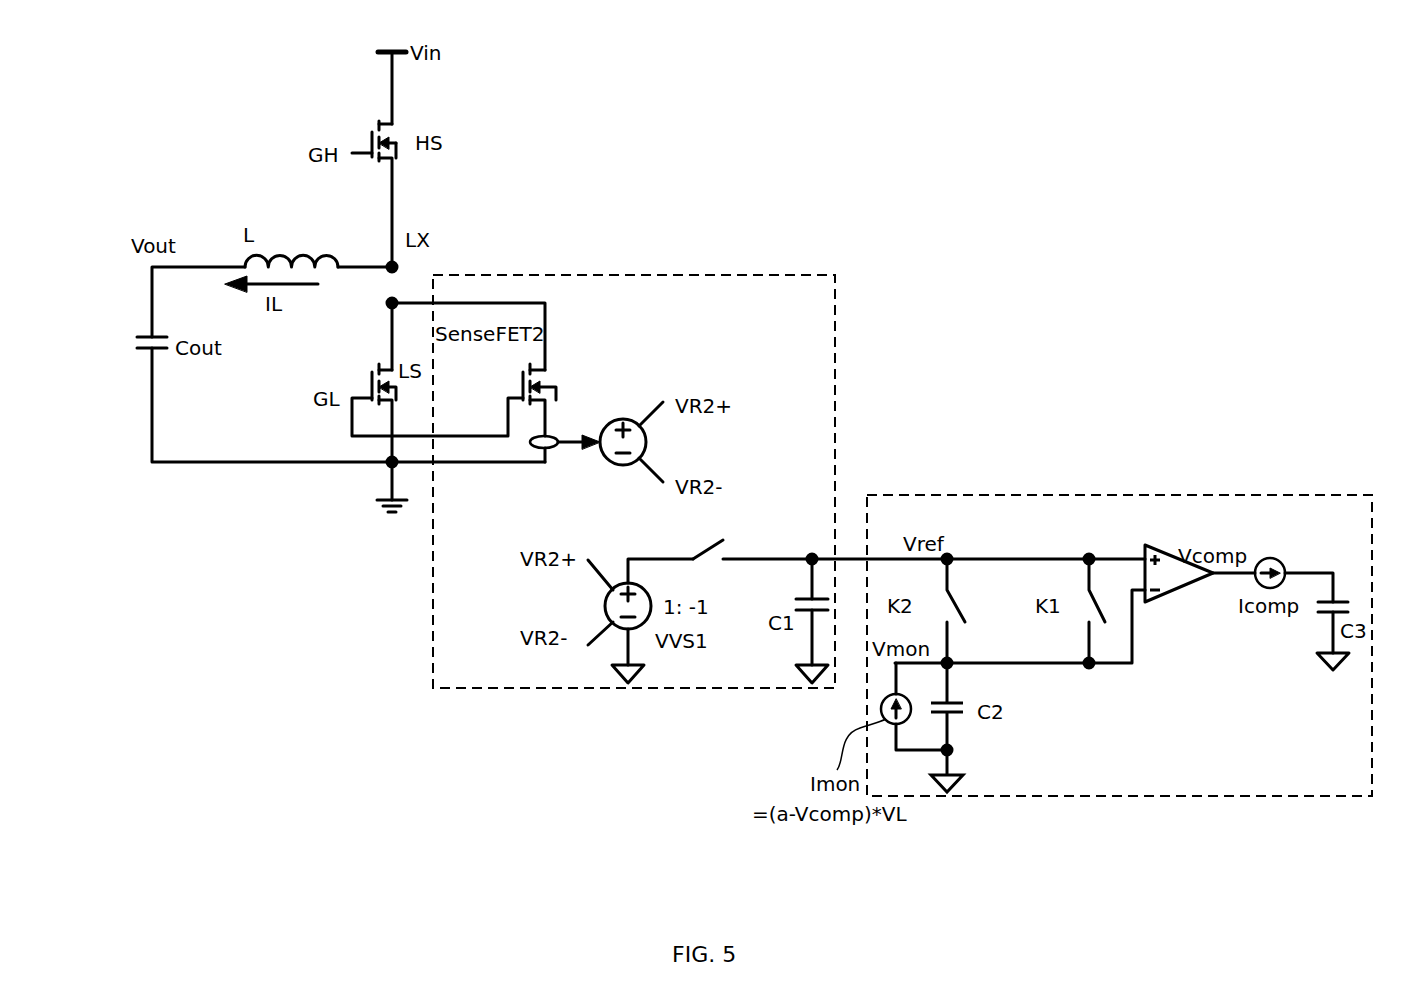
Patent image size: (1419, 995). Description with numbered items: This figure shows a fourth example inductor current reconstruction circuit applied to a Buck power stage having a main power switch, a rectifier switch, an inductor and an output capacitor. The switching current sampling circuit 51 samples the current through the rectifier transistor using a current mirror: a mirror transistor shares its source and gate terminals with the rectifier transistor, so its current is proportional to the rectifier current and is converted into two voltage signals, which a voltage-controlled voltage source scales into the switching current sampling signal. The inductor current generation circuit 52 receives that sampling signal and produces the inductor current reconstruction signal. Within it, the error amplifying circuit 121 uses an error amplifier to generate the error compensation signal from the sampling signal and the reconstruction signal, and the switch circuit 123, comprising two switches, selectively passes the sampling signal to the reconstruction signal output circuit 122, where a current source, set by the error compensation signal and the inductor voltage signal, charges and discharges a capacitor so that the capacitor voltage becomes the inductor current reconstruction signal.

The switching current sampling circuit 51 is at (835, 346).
The inductor current generation circuit 52 is at (1257, 797).
The error amplifying circuit 121 is at (1183, 609).
The reconstruction signal output circuit 122 is at (993, 733).
The switch circuit 123 is at (981, 625).